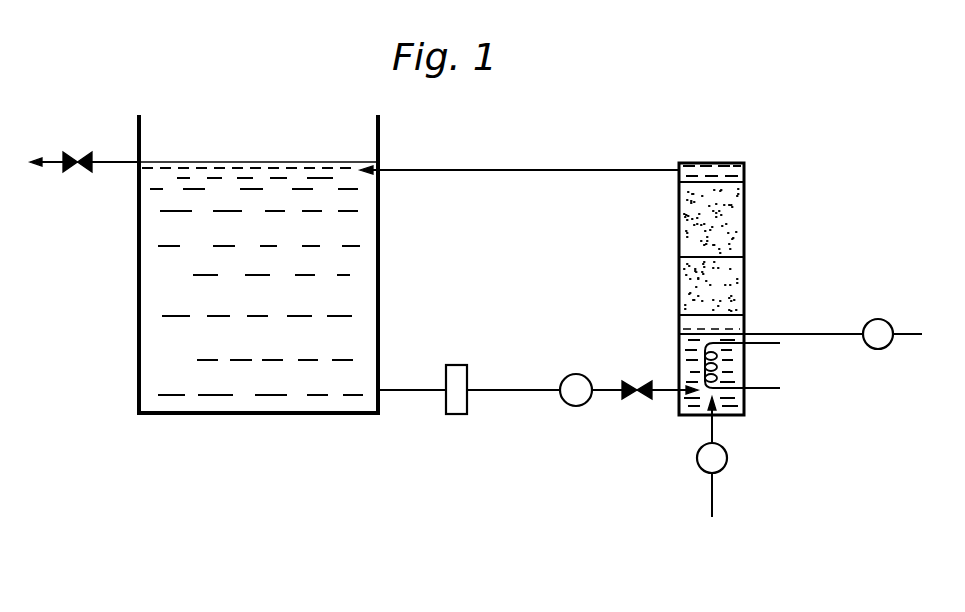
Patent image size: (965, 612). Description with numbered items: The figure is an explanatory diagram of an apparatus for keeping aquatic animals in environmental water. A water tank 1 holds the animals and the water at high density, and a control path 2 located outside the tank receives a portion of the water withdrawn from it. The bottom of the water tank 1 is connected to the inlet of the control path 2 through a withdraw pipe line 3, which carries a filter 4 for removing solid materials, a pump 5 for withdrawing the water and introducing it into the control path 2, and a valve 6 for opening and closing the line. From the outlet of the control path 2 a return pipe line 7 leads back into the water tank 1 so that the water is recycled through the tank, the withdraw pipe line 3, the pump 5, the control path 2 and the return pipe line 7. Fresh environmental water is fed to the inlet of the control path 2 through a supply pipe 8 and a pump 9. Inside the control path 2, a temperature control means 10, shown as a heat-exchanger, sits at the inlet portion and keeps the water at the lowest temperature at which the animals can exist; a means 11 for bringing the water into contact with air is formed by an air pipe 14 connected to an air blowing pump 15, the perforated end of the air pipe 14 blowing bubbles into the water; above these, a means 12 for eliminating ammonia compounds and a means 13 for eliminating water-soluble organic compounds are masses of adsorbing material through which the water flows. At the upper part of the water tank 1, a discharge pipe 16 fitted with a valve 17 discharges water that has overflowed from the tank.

The water tank 1 is at (155, 368).
The control path 2 is at (752, 221).
The withdraw pipe line 3 is at (518, 393).
The filter 4 is at (457, 363).
The pump 5 is at (576, 373).
The valve 6 is at (637, 380).
The return pipe line 7 is at (490, 168).
The supply pipe 8 is at (712, 497).
The pump 9 is at (728, 458).
The temperature control means 10 is at (718, 376).
The means for bringing the environmental water into contact with air 11 is at (718, 331).
The means for eliminating ammonia compounds 12 is at (730, 286).
The means for eliminating water-soluble organic compounds 13 is at (730, 240).
The air pipe 14 is at (832, 331).
The air blowing pump 15 is at (878, 319).
The discharge pipe 16 is at (115, 158).
The valve 17 is at (77, 151).